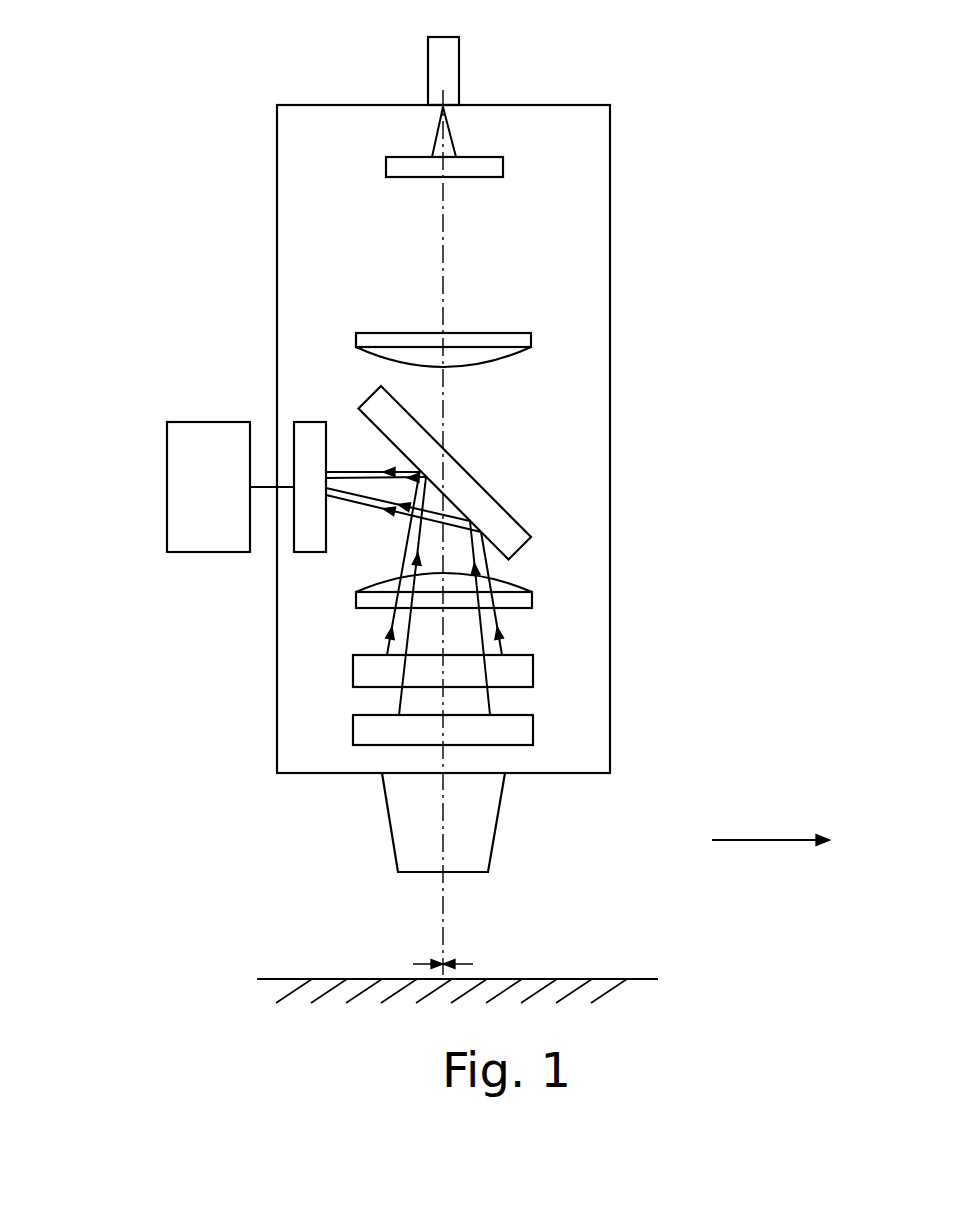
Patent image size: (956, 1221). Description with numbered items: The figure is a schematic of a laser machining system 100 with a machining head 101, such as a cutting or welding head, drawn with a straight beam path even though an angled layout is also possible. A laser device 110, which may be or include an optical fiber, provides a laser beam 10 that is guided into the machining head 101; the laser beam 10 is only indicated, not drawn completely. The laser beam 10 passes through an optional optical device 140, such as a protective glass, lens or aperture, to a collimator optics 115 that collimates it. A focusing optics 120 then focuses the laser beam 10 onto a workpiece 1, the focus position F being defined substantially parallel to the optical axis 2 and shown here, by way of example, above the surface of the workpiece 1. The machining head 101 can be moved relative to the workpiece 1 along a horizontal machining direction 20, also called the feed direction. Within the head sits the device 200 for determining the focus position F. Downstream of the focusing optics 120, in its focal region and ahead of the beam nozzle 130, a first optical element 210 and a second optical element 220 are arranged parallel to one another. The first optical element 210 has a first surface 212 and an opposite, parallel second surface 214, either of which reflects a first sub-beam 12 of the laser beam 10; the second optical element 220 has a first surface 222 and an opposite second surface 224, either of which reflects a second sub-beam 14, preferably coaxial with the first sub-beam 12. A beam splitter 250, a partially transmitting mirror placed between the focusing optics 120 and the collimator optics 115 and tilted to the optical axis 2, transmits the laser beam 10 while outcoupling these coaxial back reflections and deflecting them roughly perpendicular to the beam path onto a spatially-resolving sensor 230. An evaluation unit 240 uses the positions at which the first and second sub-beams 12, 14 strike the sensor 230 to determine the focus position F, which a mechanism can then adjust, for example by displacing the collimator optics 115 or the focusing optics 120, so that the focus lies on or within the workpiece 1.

The laser machining system 100 is at (217, 52).
The machining head 101 is at (610, 250).
The laser device 110 is at (460, 66).
The laser beam 10 is at (452, 130).
The optical device 140 is at (386, 157).
The optical axis 2 is at (444, 232).
The collimator optics 115 is at (532, 337).
The device for determining a focus position 200 is at (256, 396).
The evaluation unit 240 is at (167, 500).
The spatially-resolving sensor 230 is at (307, 553).
The beam splitter 250 is at (505, 515).
The focusing optics 120 is at (532, 600).
The first optical element 210 is at (535, 668).
The first surface 212 is at (367, 655).
The second surface 214 is at (502, 687).
The second optical element 220 is at (535, 735).
The first surface 222 is at (367, 715).
The second surface 224 is at (527, 746).
The beam nozzle 130 is at (497, 835).
The first sub-beam 12 is at (405, 558).
The second sub-beam 14 is at (407, 617).
The workpiece 1 is at (643, 979).
The focus position F is at (452, 951).
The machining direction 20 is at (768, 840).